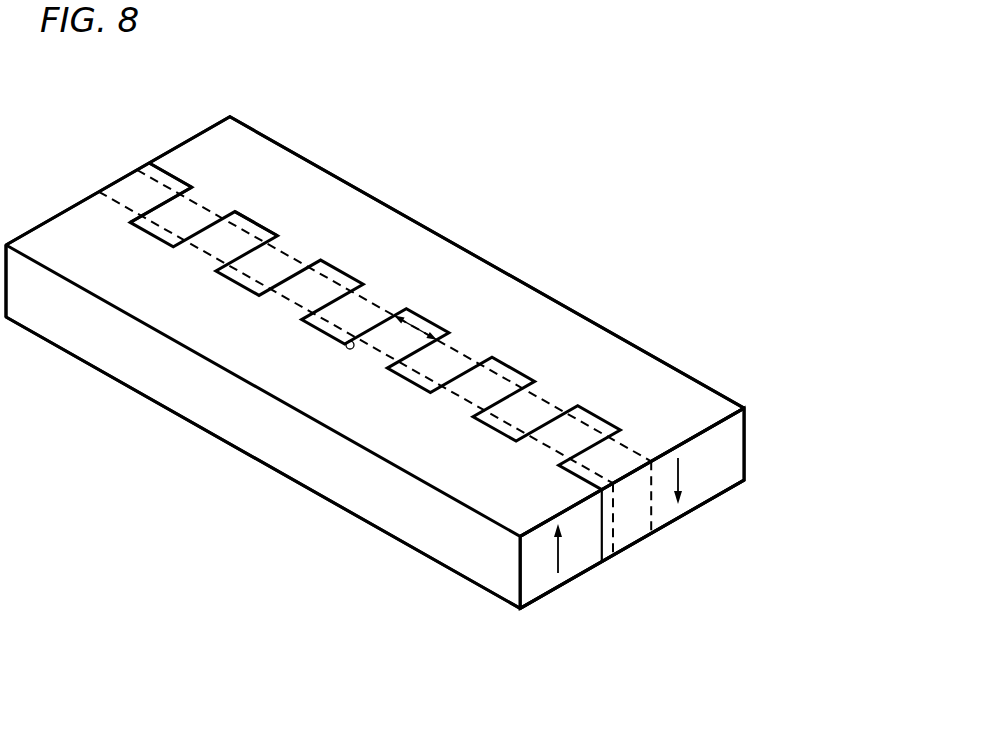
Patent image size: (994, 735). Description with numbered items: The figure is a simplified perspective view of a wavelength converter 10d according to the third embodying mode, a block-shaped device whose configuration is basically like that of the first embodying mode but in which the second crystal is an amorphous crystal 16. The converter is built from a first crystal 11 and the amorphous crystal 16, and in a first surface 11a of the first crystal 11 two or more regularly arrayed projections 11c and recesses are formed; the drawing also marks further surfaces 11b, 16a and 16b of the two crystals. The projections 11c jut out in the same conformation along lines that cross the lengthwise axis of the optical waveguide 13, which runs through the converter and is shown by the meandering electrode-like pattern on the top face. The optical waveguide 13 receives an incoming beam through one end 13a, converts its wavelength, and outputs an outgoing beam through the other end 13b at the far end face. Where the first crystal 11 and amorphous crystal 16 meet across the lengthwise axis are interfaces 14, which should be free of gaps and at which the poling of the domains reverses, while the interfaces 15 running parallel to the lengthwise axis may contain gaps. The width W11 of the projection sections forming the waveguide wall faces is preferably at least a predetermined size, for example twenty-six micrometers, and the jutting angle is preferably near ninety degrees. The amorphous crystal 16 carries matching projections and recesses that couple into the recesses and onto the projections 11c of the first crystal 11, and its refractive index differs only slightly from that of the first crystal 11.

The wavelength converter 10d is at (555, 170).
The first crystal 11 is at (262, 505).
The first surface 11a is at (442, 460).
The side surface of piezoelectric body 11b is at (378, 533).
The projections 11c is at (567, 437).
The optical waveguide 13 is at (205, 220).
The one end of the optical waveguide 13a is at (122, 181).
The other end of the optical waveguide 13b is at (633, 510).
The interfaces crossing the lengthwise axis 14 is at (190, 200).
The interfaces parallel to the lengthwise axis 15 is at (258, 220).
The amorphous crystal 16 is at (837, 393).
The lower surface of support portion 16a is at (723, 495).
The upper surface of support portion 16b is at (700, 404).
The width of the projections W11 is at (404, 320).